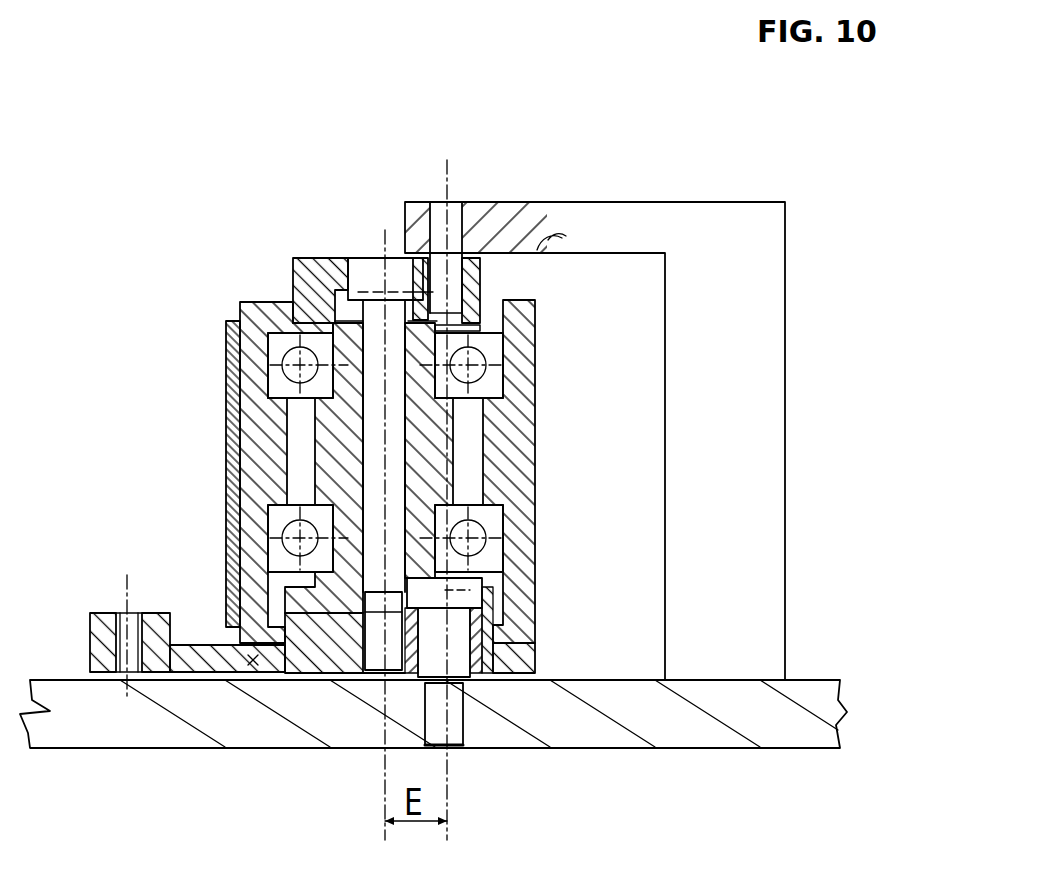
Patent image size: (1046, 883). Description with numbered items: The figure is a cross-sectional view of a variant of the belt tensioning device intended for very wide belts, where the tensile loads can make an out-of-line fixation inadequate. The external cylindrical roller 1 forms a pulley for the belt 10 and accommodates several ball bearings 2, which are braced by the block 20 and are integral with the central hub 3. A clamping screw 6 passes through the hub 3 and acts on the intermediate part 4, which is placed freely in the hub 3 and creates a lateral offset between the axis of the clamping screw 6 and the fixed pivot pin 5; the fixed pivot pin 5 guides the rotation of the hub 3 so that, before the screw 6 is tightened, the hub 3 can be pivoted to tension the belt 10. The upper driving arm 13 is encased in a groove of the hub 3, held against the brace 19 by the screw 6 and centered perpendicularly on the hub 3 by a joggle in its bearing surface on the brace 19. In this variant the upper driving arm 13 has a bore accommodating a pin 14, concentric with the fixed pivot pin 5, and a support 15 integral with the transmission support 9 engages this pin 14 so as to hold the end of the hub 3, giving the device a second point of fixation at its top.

The external cylindrical roller 1 is at (253, 325).
The ball bearings 2 is at (300, 363).
The hub 3 is at (353, 355).
The intermediate part 4 is at (310, 637).
The fixed pivot pin 5 is at (448, 645).
The clamping screw 6 is at (380, 637).
The transmission support 9 is at (228, 718).
The belt 10 is at (227, 363).
The upper driving arm 13 is at (470, 288).
The pin 14 is at (448, 235).
The support 15 is at (617, 233).
The brace 19 is at (445, 330).
The block 20 is at (440, 492).